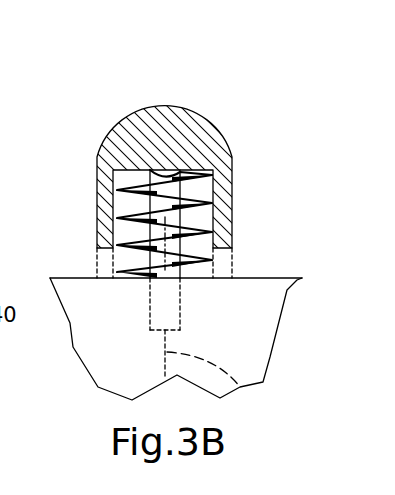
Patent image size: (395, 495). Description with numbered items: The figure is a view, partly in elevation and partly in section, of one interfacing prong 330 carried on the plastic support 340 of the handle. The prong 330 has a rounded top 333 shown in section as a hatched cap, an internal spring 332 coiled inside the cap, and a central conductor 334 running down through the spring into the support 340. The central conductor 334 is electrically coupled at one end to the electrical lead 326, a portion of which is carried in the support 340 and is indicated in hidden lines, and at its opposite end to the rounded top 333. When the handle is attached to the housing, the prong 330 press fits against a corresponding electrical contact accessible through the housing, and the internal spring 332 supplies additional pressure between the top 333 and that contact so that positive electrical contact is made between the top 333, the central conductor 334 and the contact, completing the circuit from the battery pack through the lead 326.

The interfacing prong 330 is at (113, 103).
The rounded top 333 is at (101, 147).
The internal spring 332 is at (117, 189).
The central conductor 334 is at (181, 278).
The plastic support 340 is at (97, 322).
The electrical lead 326 is at (240, 387).